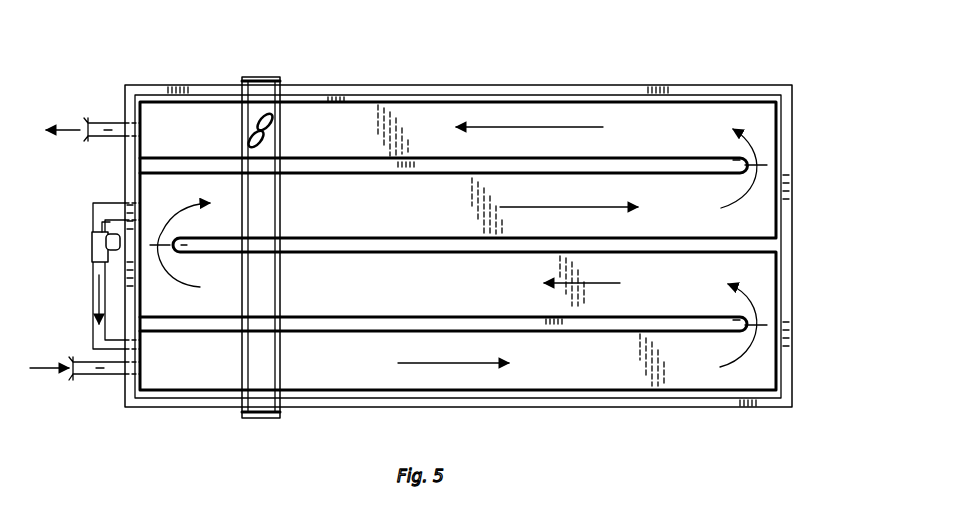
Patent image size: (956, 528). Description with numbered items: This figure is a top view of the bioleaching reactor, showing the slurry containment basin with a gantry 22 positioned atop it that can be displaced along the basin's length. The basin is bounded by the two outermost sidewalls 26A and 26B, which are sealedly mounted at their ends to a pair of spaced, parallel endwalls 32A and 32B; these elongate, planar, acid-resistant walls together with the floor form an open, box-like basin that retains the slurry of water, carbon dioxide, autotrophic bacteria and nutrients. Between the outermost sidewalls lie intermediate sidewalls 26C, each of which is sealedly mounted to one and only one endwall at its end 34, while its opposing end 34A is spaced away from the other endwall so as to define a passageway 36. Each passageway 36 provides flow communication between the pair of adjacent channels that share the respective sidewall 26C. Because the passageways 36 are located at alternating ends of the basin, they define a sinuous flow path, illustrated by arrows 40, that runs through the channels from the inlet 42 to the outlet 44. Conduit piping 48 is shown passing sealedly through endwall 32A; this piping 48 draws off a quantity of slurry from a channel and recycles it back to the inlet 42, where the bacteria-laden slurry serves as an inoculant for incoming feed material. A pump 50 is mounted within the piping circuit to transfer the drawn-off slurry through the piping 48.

The gantry 22 is at (284, 216).
The outermost sidewall 26A is at (434, 85).
The outermost sidewall 26B is at (497, 407).
The sidewall 26C is at (448, 173).
The endwall 32A is at (125, 172).
The endwall 32B is at (793, 218).
The sidewall end 34 is at (148, 158).
The opposing sidewall end 34A is at (182, 241).
The passageway 36 is at (745, 148).
The arrows 40 is at (534, 207).
The inlet 42 is at (110, 375).
The outlet 44 is at (108, 122).
The conduit piping 48 is at (93, 306).
The pump 50 is at (92, 246).